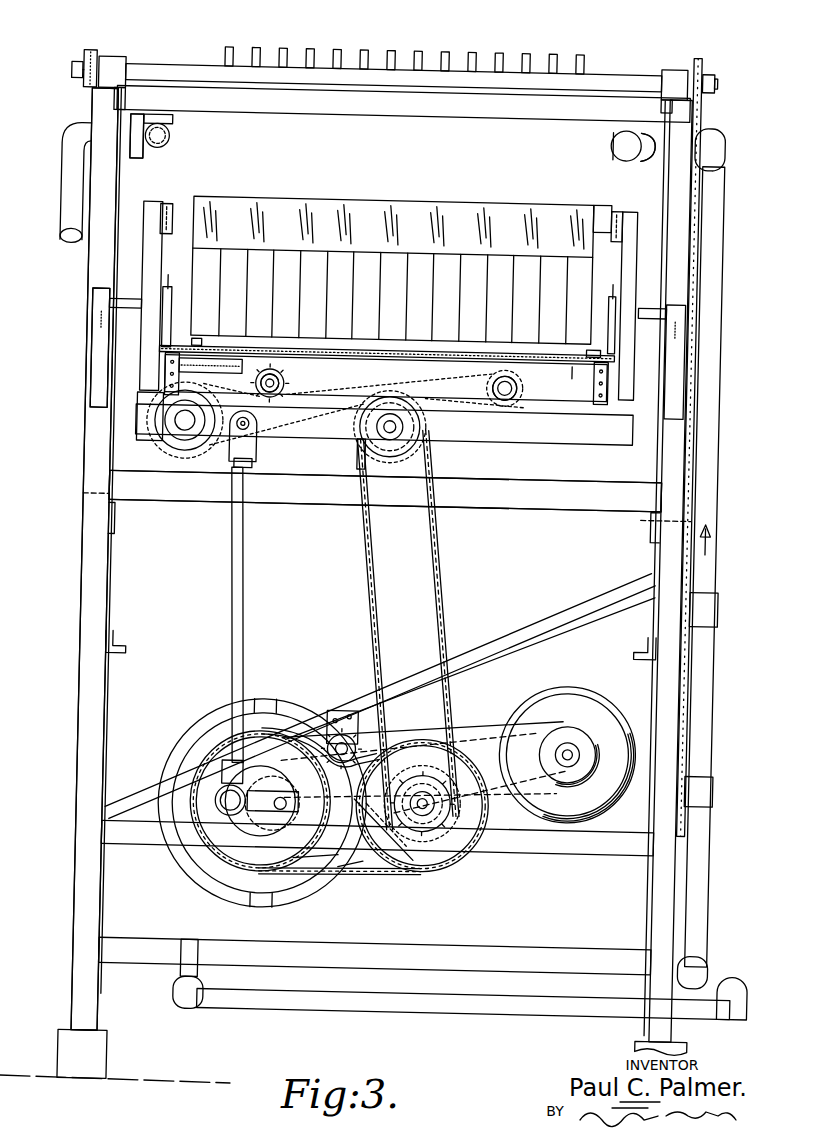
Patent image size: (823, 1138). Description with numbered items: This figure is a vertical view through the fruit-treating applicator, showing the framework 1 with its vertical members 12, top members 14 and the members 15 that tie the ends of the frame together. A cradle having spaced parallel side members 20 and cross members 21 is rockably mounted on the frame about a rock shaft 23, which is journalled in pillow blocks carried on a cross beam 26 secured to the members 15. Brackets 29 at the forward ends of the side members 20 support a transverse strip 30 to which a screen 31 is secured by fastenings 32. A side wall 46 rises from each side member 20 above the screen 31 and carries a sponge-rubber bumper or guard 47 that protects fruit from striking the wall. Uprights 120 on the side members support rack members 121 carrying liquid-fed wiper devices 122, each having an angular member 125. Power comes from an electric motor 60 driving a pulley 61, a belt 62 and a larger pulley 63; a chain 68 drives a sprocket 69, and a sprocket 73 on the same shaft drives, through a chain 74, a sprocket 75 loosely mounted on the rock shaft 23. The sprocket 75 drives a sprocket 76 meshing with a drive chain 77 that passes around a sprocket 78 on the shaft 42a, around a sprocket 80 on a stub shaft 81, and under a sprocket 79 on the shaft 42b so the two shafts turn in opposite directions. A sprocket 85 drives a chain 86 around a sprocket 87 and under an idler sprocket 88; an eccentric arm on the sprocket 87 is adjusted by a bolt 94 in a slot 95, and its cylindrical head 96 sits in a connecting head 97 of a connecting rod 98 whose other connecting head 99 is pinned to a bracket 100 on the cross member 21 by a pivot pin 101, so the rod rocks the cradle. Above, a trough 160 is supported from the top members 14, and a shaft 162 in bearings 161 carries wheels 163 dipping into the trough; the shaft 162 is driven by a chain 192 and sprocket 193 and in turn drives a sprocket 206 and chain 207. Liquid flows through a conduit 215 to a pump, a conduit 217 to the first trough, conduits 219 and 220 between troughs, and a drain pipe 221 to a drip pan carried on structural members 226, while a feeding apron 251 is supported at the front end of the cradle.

The framework 1 is at (70, 950).
The vertical members 12 is at (90, 262).
The top members 14 is at (132, 137).
The members 15 is at (118, 515).
The side members 20 is at (158, 384).
The cross members 21 is at (598, 433).
The rock shaft 23 is at (400, 440).
The cross beam 26 is at (352, 462).
The brackets 29 is at (606, 386).
The strip 30 is at (570, 375).
The screen 31 is at (560, 358).
The fastenings 32 is at (183, 343).
The shaft 42a is at (510, 395).
The shaft 42b is at (253, 385).
The side wall 46 is at (168, 297).
The bumper or guard 47 is at (170, 283).
The electric motor 60 is at (572, 700).
The pulley 61 is at (236, 822).
The belt 62 is at (477, 725).
The larger pulley 63 is at (262, 704).
The chain 68 is at (378, 860).
The sprocket 69 is at (438, 865).
The sprocket 73 is at (425, 778).
The chain 74 is at (443, 608).
The sprocket 75 is at (370, 500).
The sprocket 76 is at (395, 432).
The drive chain 77 is at (483, 411).
The sprocket 78 is at (505, 398).
The sprocket 79 is at (282, 385).
The sprocket 80 is at (168, 440).
The stub shaft 81 is at (176, 420).
The sprocket 85 is at (384, 824).
The chain 86 is at (338, 862).
The sprocket 87 is at (355, 868).
The idler sprocket 88 is at (352, 730).
The bolt 94 is at (286, 814).
The slot 95 is at (272, 814).
The cylindrical head 96 is at (232, 812).
The connecting head 97 is at (228, 776).
The connecting rod 98 is at (245, 603).
The connecting head 99 is at (254, 444).
The bracket 100 is at (260, 426).
The pivot pin 101 is at (233, 463).
The uprights 120 is at (147, 220).
The rack members 121 is at (164, 206).
The liquid-fed wiper devices 122 is at (405, 262).
The angular member 125 is at (603, 206).
The trough 160 is at (372, 112).
The bearings 161 is at (120, 62).
The shaft 162 is at (172, 68).
The wheels 163 is at (408, 54).
The chain 192 is at (700, 118).
The sprocket 193 is at (706, 73).
The sprocket 206 is at (80, 70).
The chain 207 is at (97, 50).
The conduit 215 is at (185, 907).
The conduit 217 is at (632, 140).
The conduit 219 is at (163, 145).
The conduit 220 is at (172, 136).
The drain pipe 221 is at (72, 187).
The structural members 226 is at (116, 651).
The feeding apron 251 is at (110, 315).